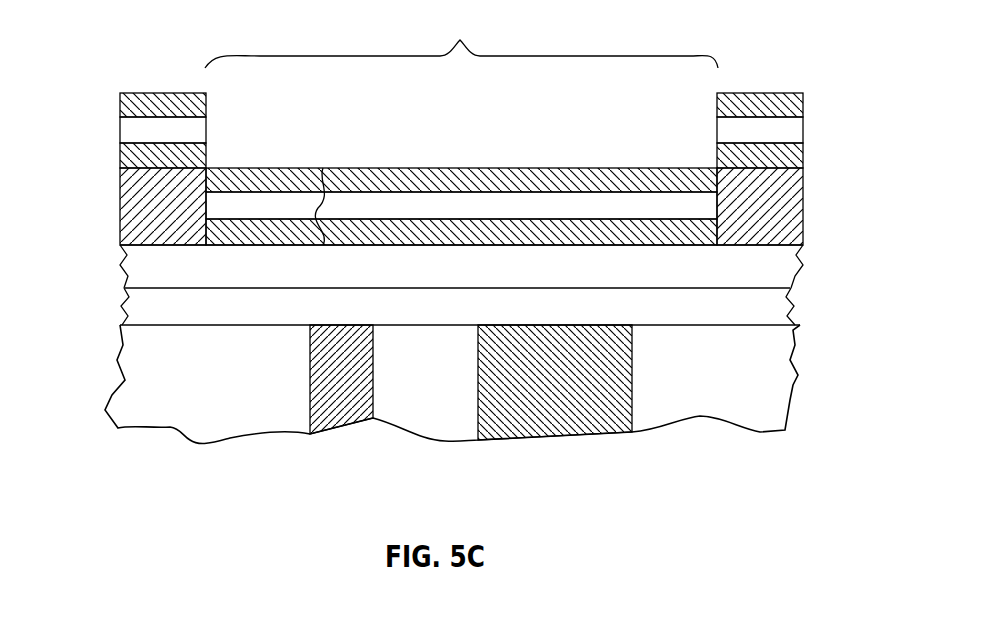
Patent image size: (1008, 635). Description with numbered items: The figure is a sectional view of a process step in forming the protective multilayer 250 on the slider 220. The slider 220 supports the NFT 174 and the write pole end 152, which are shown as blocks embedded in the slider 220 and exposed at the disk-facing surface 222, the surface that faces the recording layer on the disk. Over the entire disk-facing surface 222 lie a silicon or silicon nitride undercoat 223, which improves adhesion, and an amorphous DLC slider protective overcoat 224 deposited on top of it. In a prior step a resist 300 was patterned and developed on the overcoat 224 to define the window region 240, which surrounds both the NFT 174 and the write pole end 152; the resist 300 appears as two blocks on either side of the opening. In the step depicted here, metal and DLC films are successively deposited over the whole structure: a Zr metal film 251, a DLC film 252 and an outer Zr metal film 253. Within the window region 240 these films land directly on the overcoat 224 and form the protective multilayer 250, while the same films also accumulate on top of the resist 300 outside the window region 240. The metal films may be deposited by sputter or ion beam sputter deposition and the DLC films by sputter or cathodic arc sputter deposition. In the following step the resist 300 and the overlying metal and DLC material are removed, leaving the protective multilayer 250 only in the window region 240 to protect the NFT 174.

The write pole end 152 is at (605, 432).
The NFT 174 is at (325, 432).
The slider 220 is at (770, 425).
The disk-facing surface 222 is at (798, 326).
The undercoat 223 is at (126, 310).
The slider protective overcoat 224 is at (126, 262).
The window region 240 is at (461, 39).
The protective multilayer 250 is at (318, 208).
The metal film 251 is at (120, 160).
The DLC film 252 is at (206, 140).
The outer metal film 253 is at (120, 118).
The resist 300 is at (121, 205).